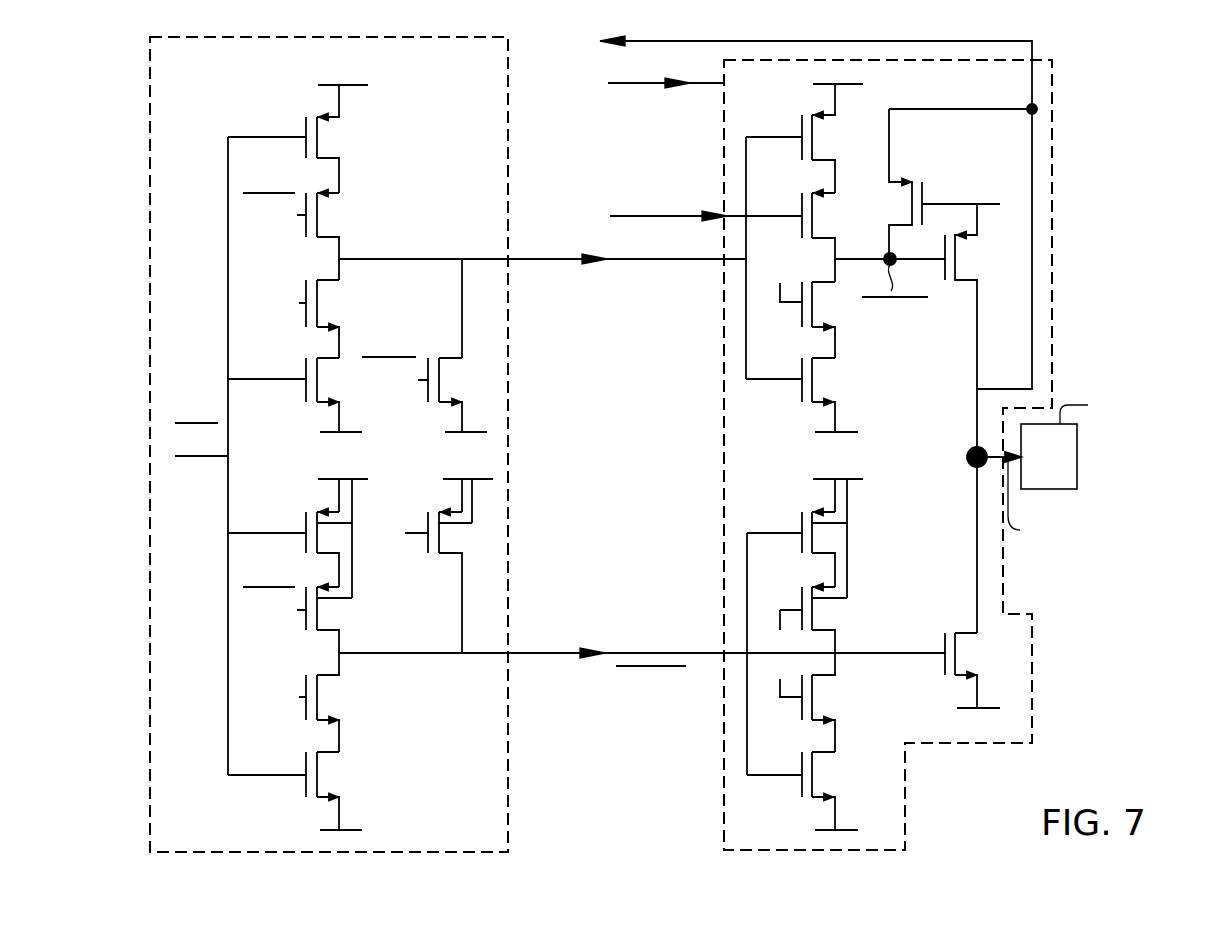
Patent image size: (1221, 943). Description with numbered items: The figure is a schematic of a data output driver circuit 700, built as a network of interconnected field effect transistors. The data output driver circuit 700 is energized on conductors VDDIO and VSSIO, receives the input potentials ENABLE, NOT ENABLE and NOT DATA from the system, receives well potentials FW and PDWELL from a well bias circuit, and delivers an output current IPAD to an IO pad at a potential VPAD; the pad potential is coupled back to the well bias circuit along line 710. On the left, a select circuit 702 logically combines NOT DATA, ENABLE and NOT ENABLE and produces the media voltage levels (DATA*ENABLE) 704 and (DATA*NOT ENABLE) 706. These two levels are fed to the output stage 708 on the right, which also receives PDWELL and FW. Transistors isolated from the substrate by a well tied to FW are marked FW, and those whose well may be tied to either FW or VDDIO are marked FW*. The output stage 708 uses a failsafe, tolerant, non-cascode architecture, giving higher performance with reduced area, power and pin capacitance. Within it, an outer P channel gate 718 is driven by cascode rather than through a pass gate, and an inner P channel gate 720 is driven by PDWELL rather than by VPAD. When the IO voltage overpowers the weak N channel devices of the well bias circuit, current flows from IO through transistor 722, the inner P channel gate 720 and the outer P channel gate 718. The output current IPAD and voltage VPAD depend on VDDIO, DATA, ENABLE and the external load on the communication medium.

The data output driver circuit 700 is at (1098, 150).
The select circuit 702 is at (508, 133).
The (DATA*ENABLE) voltage level 704 is at (527, 259).
The (DATA*NOT ENABLE) voltage level 706 is at (528, 653).
The output stage 708 is at (723, 788).
The line 710 is at (605, 44).
The outer P channel gate 718 is at (802, 127).
The inner P channel gate 720 is at (800, 200).
The transistor 722 is at (913, 180).